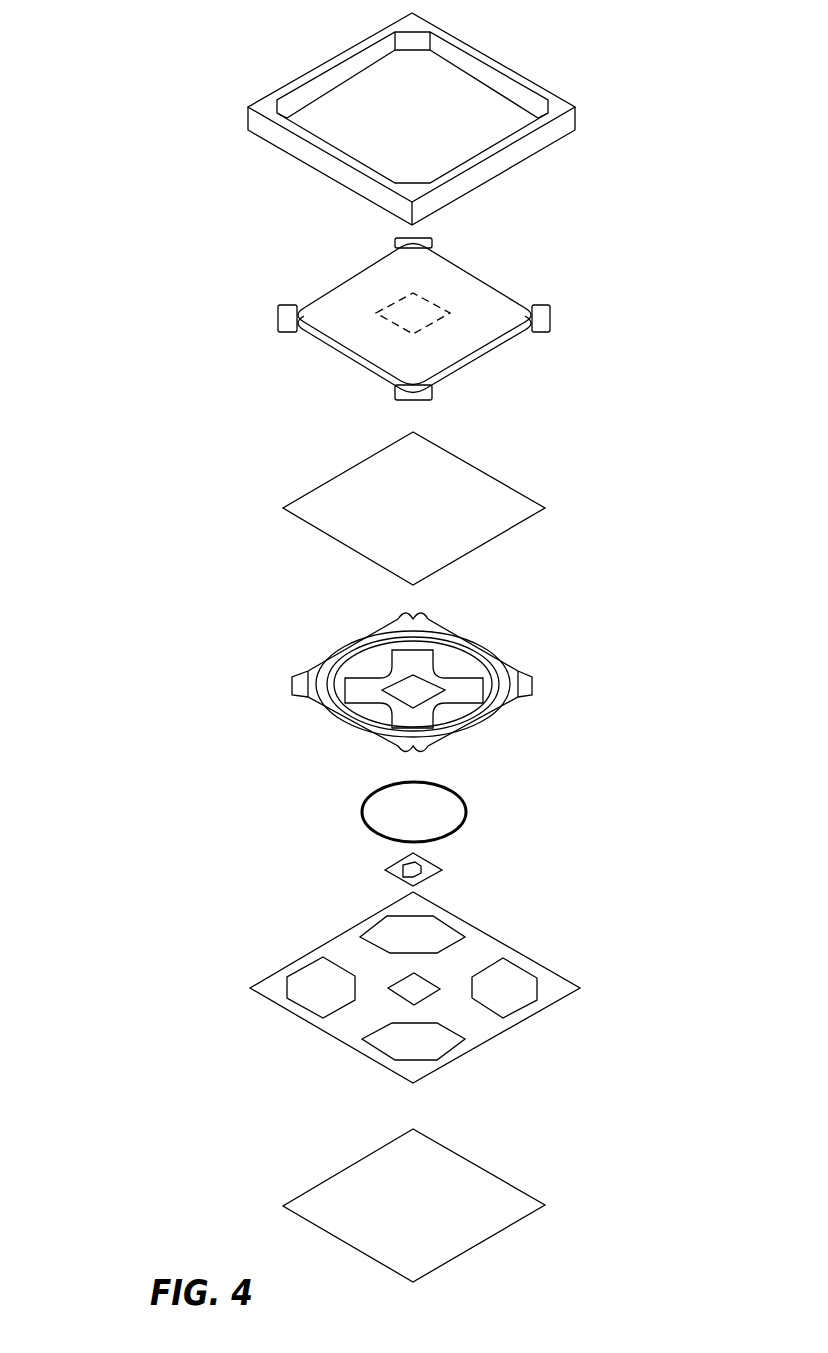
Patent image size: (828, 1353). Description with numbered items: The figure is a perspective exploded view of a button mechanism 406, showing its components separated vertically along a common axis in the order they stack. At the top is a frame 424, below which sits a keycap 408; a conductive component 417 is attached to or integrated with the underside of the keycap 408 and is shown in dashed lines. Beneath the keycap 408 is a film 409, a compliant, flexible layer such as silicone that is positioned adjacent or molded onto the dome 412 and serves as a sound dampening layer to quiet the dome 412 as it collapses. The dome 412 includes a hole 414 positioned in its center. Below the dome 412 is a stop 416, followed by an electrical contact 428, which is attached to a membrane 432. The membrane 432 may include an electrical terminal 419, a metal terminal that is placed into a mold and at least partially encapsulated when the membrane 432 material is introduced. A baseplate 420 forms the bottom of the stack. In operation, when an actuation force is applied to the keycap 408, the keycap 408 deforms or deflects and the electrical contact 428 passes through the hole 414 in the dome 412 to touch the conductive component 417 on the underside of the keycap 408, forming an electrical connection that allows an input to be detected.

The button mechanism 406 is at (143, 165).
The frame 424 is at (497, 58).
The keycap 408 is at (451, 319).
The conductive component 417 is at (395, 303).
The film 409 is at (345, 492).
The dome 412 is at (463, 676).
The hole 414 is at (397, 689).
The stop 416 is at (465, 797).
The electrical contact 428 is at (440, 868).
The membrane 432 is at (428, 983).
The electrical terminal 419 is at (400, 981).
The baseplate 420 is at (495, 1202).